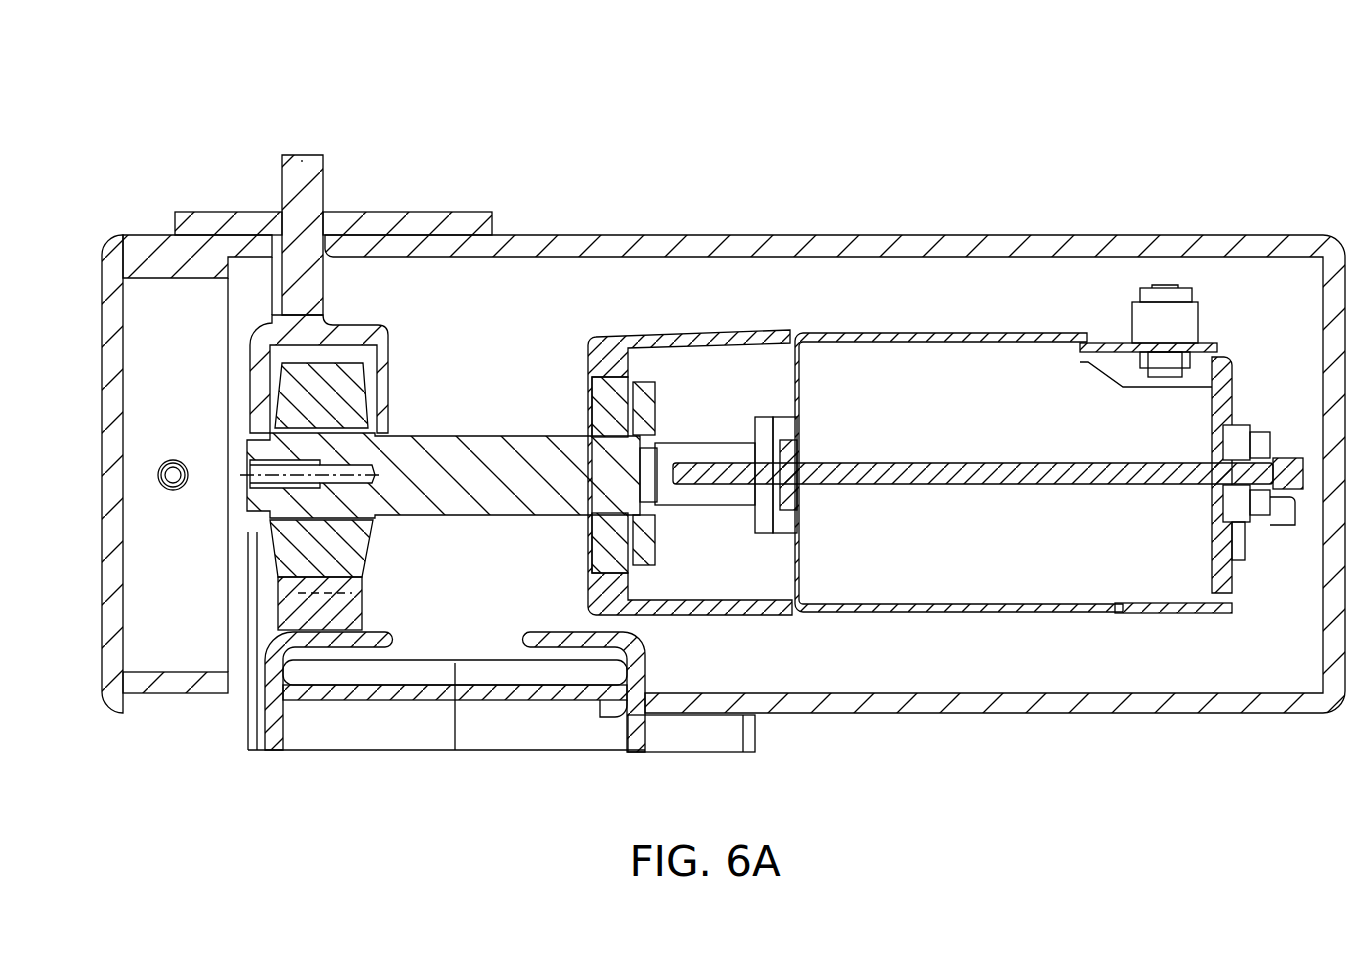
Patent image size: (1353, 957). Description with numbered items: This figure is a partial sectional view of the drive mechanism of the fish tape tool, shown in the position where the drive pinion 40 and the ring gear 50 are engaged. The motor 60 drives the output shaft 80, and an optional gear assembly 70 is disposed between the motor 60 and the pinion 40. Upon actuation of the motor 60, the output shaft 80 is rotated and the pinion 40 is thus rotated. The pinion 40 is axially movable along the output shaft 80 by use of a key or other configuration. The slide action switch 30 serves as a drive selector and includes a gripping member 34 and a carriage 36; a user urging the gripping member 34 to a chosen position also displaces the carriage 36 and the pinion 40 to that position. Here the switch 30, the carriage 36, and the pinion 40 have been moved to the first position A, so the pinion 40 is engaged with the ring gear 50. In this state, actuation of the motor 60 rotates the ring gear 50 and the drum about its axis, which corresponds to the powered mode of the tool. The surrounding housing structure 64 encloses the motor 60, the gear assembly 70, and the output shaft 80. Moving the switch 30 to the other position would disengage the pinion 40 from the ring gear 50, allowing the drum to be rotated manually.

The first position A is at (303, 155).
The slide action switch 30 is at (325, 192).
The gripping member 34 is at (298, 178).
The carriage 36 is at (303, 283).
The drive pinion 40 is at (297, 393).
The ring gear 50 is at (292, 618).
The motor 60 is at (995, 392).
The housing 64 is at (925, 247).
The gear assembly 70 is at (717, 337).
The output shaft 80 is at (540, 455).